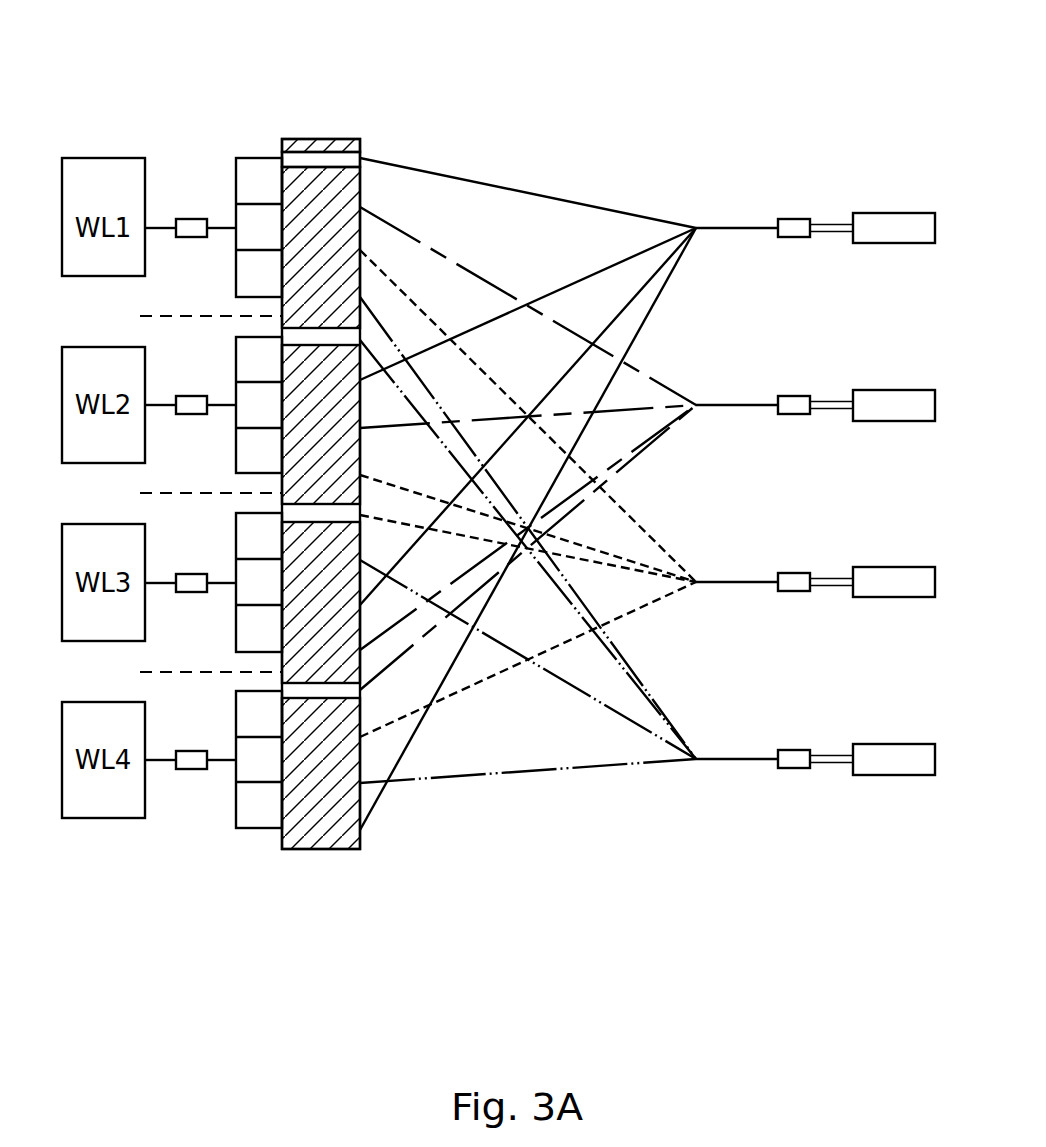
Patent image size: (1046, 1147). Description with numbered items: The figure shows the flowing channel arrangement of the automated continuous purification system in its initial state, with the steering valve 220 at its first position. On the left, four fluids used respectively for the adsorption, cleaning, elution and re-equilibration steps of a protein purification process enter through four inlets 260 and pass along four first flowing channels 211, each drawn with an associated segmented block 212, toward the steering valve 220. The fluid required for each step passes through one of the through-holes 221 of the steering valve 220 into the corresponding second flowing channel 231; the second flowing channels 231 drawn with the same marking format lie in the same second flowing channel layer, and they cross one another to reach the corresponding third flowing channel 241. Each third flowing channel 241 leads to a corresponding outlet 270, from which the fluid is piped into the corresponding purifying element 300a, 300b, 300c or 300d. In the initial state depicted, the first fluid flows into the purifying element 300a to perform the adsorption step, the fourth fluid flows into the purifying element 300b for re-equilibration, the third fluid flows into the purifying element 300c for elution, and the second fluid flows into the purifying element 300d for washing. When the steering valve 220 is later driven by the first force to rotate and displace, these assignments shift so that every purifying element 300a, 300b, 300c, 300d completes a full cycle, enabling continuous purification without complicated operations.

The first flowing channel 211 is at (221, 222).
The second waveguide / modulator section 212 is at (258, 158).
The steering valve 220 is at (325, 138).
The through-hole 221 is at (372, 152).
The second flowing channel 231 is at (530, 192).
The third flowing channel 241 is at (727, 225).
The inlet 260 is at (185, 218).
The outlet 270 is at (795, 227).
The purifying element 300a is at (896, 222).
The purifying element 300b is at (896, 400).
The purifying element 300c is at (895, 576).
The purifying element 300d is at (895, 752).